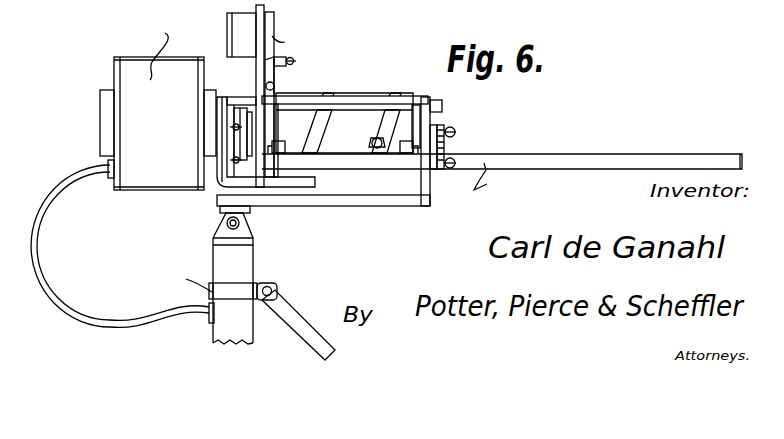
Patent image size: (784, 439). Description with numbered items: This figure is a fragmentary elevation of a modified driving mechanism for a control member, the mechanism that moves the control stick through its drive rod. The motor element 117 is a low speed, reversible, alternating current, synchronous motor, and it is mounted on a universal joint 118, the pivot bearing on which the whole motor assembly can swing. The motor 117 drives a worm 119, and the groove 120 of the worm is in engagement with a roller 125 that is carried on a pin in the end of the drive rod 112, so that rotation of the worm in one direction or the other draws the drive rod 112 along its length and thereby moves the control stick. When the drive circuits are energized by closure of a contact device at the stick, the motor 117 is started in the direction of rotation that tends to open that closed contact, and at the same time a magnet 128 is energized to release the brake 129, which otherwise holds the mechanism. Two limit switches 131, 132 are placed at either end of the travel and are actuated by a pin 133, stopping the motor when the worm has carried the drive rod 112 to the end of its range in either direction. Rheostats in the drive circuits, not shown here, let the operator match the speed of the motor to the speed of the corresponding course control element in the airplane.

The drive rod 112 is at (637, 160).
The motor element 117 is at (182, 67).
The universal joint 118 is at (219, 232).
The worm 119 is at (313, 95).
The groove 120 is at (336, 95).
The roller 125 is at (373, 140).
The magnet 128 is at (240, 25).
The brake 129 is at (276, 68).
The limit switch 131 is at (279, 153).
The limit switch 132 is at (402, 153).
The pin 133 is at (378, 151).